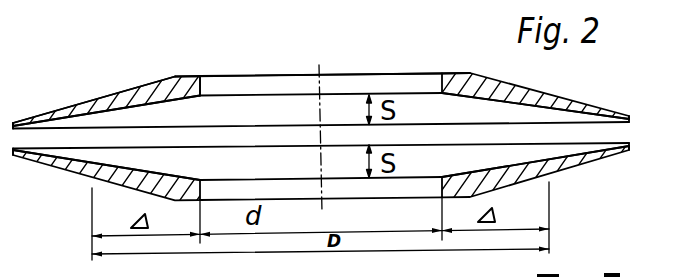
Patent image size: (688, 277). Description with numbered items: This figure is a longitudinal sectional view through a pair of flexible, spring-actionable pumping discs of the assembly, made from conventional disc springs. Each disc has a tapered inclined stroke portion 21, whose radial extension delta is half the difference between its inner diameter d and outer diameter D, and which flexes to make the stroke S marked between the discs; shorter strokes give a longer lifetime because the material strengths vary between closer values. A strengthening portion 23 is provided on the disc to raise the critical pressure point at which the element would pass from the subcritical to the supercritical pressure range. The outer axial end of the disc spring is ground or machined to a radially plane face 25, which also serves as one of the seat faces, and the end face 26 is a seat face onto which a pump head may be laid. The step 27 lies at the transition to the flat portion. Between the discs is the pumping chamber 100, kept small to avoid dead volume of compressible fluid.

The inclined stroke portion 21 is at (133, 98).
The strengthening portion 23 is at (62, 110).
The radially plane face 25 is at (34, 136).
The seat face 26 is at (183, 76).
The shoulder step 27 is at (199, 90).
The pumping chamber 100 is at (178, 117).